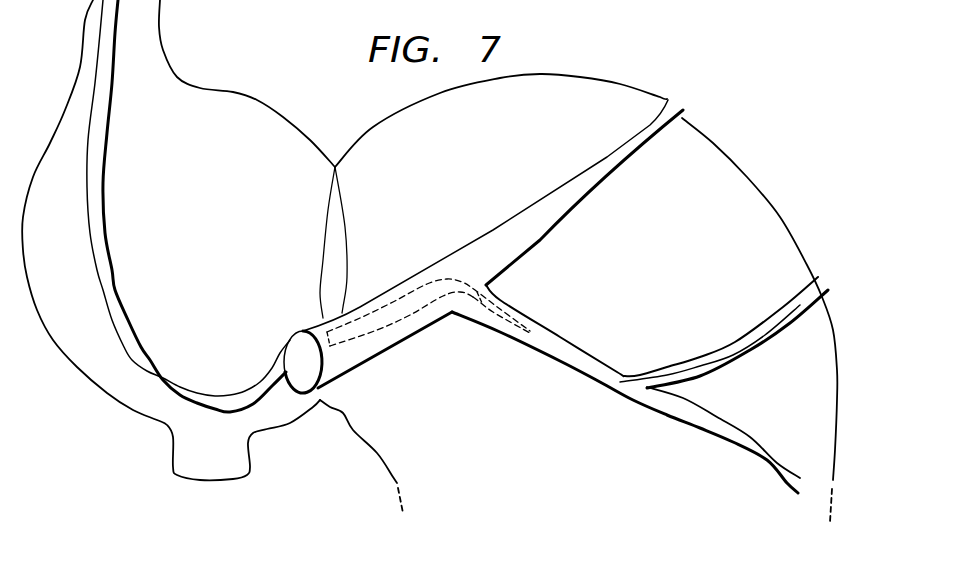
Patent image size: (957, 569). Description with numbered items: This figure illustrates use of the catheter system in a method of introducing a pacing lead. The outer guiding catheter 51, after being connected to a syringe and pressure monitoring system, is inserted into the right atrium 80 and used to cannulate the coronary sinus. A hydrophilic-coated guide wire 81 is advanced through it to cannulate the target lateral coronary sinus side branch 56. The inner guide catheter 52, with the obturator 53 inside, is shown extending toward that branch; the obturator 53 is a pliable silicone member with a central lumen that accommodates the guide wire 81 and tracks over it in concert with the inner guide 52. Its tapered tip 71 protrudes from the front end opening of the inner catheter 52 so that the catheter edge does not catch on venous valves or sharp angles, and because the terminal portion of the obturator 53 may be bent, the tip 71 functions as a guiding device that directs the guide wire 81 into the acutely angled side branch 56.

The outer guiding catheter 51 is at (115, 95).
The right atrium 80 is at (257, 100).
The inner guide catheter 52 is at (431, 284).
The obturator 53 is at (527, 306).
The tapered tip 71 is at (493, 318).
The side branch 56 is at (577, 370).
The guide wire 81 is at (603, 368).